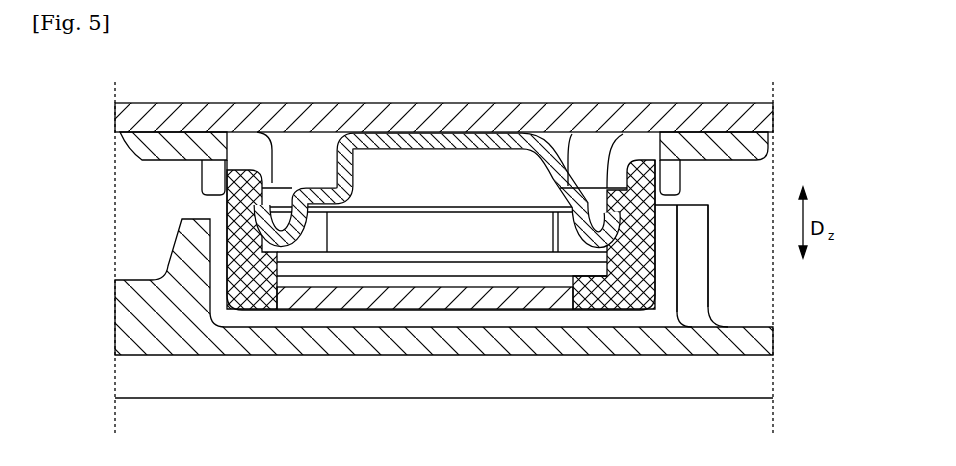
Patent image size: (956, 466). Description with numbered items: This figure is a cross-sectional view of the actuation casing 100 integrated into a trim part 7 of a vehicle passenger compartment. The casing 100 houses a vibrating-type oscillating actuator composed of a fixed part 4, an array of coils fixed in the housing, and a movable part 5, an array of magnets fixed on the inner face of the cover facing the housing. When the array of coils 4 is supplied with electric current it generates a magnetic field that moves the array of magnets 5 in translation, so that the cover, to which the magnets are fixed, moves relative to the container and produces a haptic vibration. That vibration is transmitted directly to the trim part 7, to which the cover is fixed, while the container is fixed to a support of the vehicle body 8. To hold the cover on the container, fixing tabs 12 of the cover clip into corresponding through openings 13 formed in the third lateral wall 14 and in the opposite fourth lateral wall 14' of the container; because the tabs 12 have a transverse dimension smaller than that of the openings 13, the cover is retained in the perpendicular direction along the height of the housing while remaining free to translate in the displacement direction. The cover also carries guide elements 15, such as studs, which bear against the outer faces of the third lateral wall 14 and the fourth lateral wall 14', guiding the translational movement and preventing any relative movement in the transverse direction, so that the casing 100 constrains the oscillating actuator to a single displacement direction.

The fixed part 4 is at (513, 258).
The movable part 5 is at (500, 233).
The trim part 7 is at (733, 115).
The vehicle body 8 is at (740, 335).
The fixing tab 12 is at (210, 220).
The through opening 13 is at (207, 204).
The third lateral wall 14 is at (462, 297).
The fourth lateral wall 14' is at (705, 258).
The guide element 15 is at (202, 174).
The actuation casing 100 is at (412, 257).